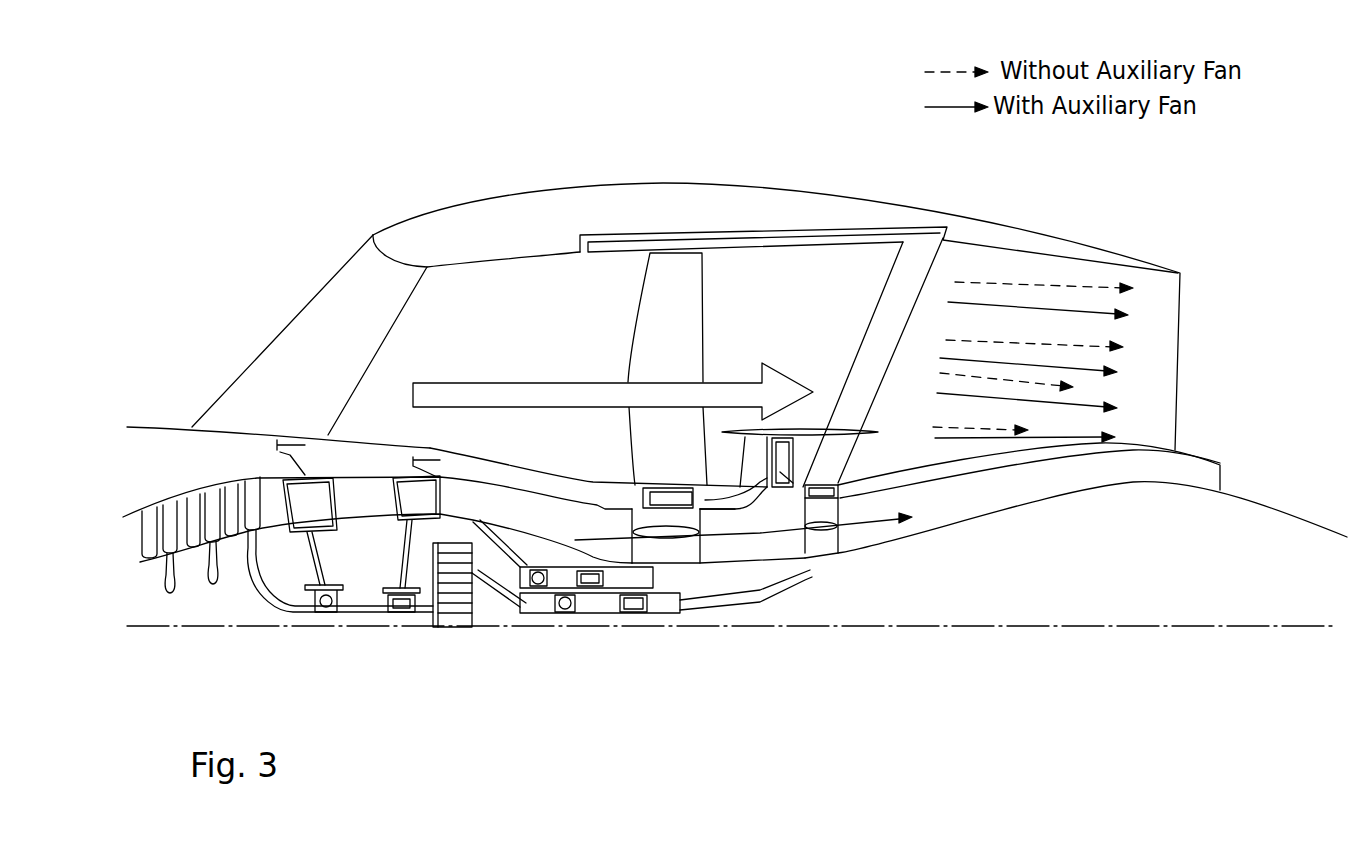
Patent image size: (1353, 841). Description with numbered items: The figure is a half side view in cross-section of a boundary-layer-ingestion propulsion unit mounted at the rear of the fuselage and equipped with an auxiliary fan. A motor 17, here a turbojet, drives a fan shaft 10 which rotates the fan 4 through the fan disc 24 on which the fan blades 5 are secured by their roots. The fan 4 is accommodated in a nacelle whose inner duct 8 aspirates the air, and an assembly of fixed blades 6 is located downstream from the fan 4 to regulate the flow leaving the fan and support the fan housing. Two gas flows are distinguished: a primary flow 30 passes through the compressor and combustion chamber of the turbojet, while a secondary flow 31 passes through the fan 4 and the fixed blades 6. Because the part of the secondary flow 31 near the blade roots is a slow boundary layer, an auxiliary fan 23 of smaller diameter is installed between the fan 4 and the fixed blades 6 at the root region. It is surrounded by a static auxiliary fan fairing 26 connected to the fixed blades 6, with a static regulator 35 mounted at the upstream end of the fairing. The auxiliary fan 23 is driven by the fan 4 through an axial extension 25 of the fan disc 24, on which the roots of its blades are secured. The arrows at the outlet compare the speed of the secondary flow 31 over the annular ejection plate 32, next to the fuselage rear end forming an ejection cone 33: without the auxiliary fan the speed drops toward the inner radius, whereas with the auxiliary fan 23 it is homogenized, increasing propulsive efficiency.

The fan 4 is at (712, 355).
The fan blades 5 is at (680, 292).
The assembly of fixed blades 6 is at (897, 275).
The inner duct 8 is at (520, 331).
The fan shaft 10 is at (598, 600).
The motor 17 is at (226, 593).
The auxiliary fan 23 is at (813, 545).
The fan disc 24 is at (668, 503).
The axial extension 25 is at (782, 472).
The auxiliary fan fairing 26 is at (813, 453).
The primary flow 30 is at (867, 525).
The secondary flow 31 is at (425, 395).
The ejection plate 32 is at (1160, 353).
The ejection cone 33 is at (1269, 490).
The static regulator 35 is at (757, 452).